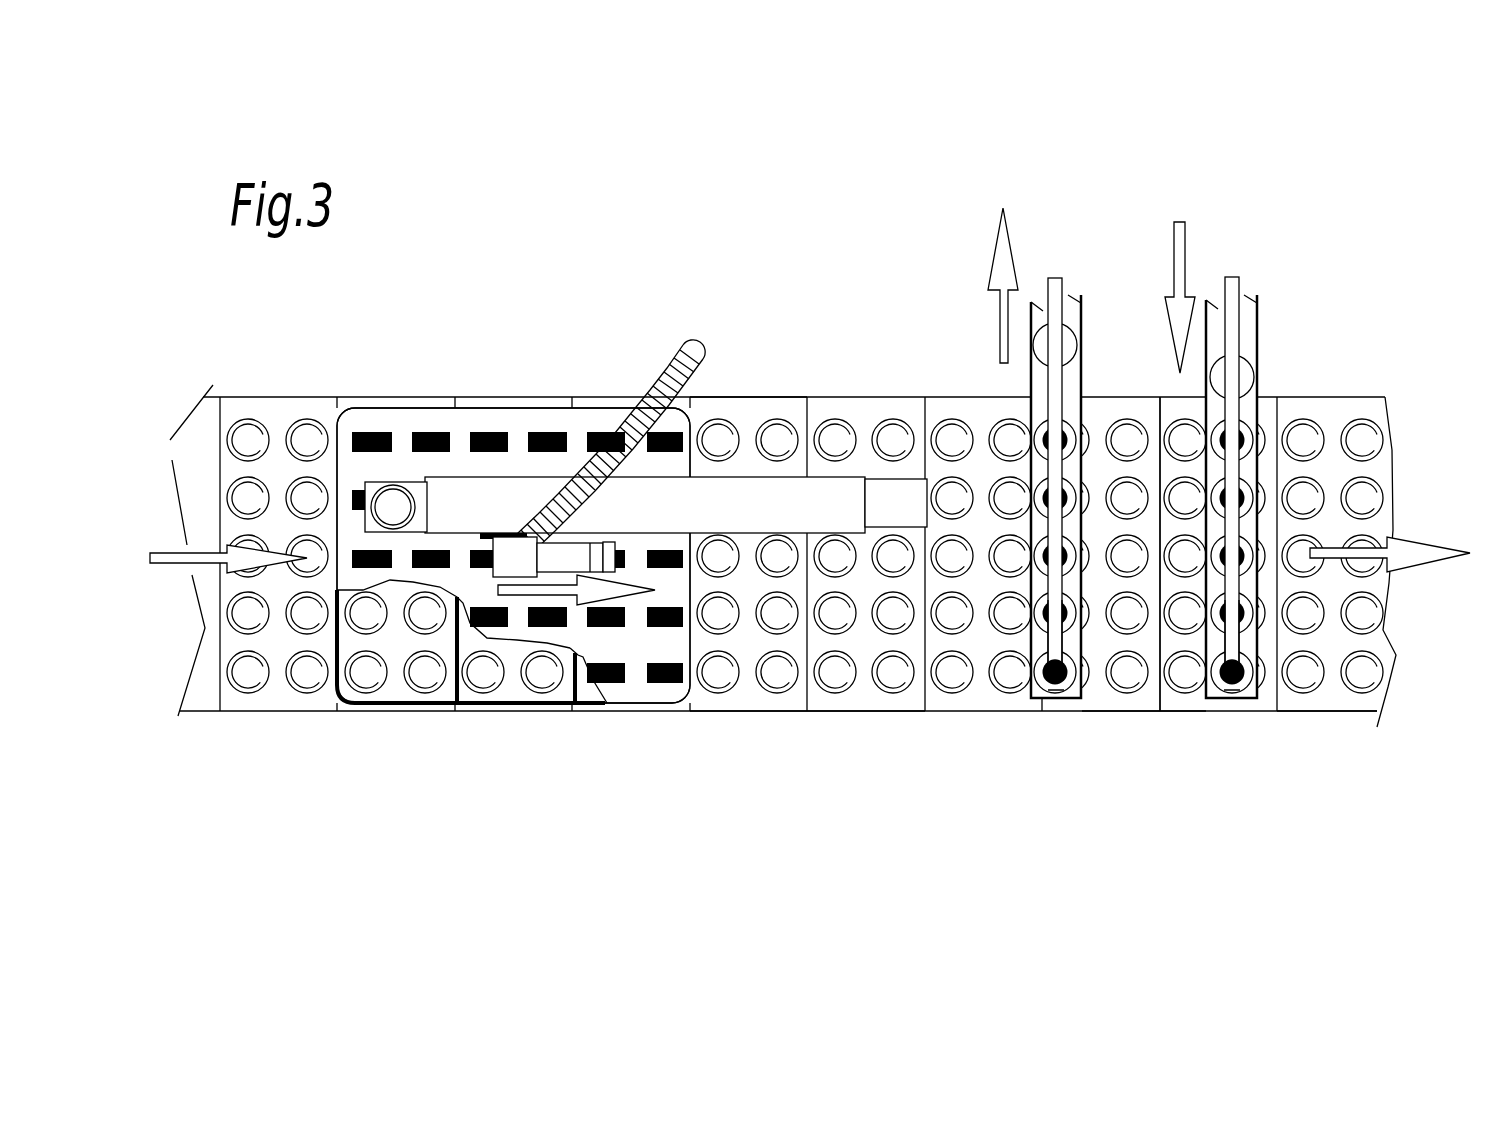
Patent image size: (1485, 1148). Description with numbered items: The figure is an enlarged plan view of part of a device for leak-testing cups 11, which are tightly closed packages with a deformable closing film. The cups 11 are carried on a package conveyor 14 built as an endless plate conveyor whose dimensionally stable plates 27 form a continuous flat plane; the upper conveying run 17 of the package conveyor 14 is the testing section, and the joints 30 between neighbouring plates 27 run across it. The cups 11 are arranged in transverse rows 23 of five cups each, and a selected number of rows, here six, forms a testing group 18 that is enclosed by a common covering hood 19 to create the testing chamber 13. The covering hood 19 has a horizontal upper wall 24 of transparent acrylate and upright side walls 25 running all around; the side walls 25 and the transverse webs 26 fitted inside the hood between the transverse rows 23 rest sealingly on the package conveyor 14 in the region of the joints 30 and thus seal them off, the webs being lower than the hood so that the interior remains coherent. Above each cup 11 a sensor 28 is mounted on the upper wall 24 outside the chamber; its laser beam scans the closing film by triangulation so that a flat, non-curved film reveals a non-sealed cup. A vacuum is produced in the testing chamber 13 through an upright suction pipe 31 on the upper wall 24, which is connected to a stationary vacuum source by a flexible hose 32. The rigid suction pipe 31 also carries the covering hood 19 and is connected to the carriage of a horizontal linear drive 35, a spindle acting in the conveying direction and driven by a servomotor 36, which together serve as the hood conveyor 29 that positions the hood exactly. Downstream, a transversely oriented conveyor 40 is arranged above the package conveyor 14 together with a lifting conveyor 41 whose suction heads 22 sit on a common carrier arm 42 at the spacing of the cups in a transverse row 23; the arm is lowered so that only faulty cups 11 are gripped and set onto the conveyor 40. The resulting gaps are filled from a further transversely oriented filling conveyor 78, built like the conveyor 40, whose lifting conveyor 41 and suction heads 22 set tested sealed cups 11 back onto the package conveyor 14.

The cup 11 is at (1250, 468).
The testing chamber 13 is at (392, 693).
The package conveyor 14 is at (780, 732).
The conveying run 17 is at (795, 395).
The testing group 18 is at (498, 700).
The covering hood 19 is at (408, 714).
The suction head 22 is at (1060, 672).
The transverse row 23 is at (838, 410).
The upper wall 24 is at (518, 457).
The side wall 25 is at (369, 406).
The transverse web 26 is at (587, 700).
The plate 27 is at (852, 703).
The sensor 28 is at (617, 430).
The hood conveyor 29 is at (752, 432).
The joint 30 is at (1155, 692).
The suction pipe 31 is at (490, 538).
The hose 32 is at (705, 348).
The linear drive 35 is at (912, 470).
The servomotor 36 is at (392, 500).
The conveyor 40 is at (1094, 353).
The lifting conveyor 41 is at (1047, 637).
The carrier arm 42 is at (1052, 288).
The filling conveyor 78 is at (1270, 332).